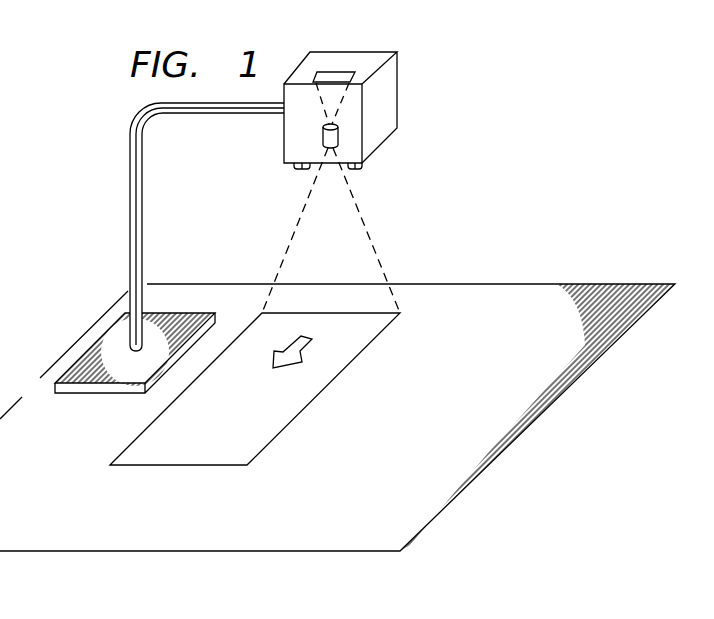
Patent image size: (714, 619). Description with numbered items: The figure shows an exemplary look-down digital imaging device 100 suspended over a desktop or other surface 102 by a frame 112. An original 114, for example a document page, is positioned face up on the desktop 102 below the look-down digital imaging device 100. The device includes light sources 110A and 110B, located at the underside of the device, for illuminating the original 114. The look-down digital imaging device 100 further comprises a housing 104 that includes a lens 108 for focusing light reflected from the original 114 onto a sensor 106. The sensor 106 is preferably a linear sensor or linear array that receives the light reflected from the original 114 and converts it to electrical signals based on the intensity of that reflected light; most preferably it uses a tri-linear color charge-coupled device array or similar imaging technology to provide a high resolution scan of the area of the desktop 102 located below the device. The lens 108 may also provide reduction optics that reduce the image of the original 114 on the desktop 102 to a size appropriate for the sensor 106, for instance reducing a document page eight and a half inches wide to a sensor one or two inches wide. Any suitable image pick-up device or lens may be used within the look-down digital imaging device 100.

The look-down digital imaging device 100 is at (516, 96).
The desktop 102 is at (485, 294).
The housing 104 is at (382, 99).
The sensor 106 is at (336, 72).
The lens 108 is at (322, 134).
The light source 110A is at (300, 172).
The light source 110B is at (355, 170).
The frame 112 is at (130, 192).
The original 114 is at (283, 409).